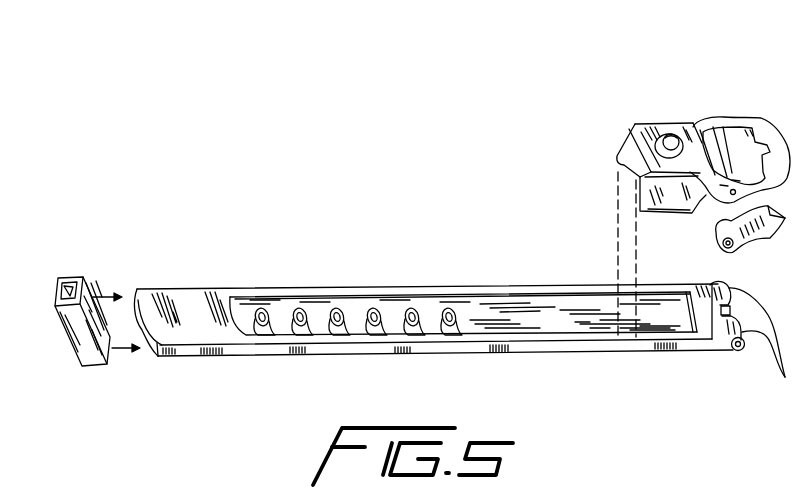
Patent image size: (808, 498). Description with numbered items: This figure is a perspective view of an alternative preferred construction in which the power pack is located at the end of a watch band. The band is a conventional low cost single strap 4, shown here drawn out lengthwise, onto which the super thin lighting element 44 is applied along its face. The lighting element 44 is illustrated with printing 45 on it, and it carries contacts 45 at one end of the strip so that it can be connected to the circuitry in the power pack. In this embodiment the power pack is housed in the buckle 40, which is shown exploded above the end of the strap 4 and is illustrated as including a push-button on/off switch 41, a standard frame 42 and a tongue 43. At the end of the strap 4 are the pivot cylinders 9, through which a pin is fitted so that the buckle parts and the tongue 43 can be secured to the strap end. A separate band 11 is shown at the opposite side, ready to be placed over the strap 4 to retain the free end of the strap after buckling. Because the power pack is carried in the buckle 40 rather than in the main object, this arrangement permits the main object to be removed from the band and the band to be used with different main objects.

The strap 4 is at (207, 303).
The pivot cylinders 9 is at (767, 345).
The band 11 is at (83, 288).
The buckle 40 is at (606, 131).
The push-button on/off switch 41 is at (677, 137).
The frame 42 is at (763, 130).
The tongue 43 is at (768, 246).
The super thin lighting element 44 is at (532, 310).
The printing 45 is at (387, 312).